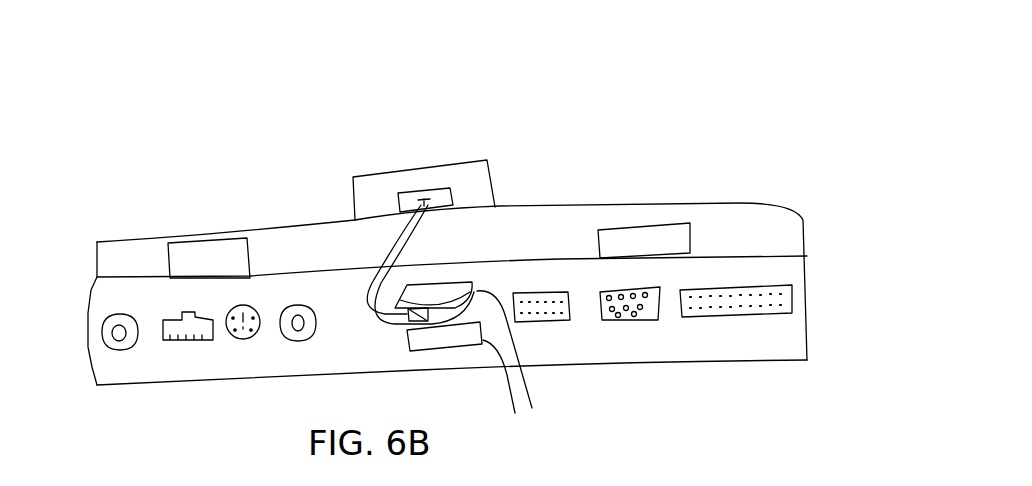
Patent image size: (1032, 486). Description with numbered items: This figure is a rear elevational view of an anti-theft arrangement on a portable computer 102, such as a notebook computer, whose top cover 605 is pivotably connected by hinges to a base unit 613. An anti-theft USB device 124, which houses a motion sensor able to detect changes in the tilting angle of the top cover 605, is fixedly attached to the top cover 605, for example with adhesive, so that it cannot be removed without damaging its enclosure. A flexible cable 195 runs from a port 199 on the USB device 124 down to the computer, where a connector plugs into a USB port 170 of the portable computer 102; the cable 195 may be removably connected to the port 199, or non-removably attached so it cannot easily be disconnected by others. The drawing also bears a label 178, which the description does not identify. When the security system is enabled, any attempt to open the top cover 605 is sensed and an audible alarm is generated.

The portable computer 102 is at (730, 107).
The USB device 124 is at (477, 160).
The connector module 178 is at (443, 283).
The flexible cable 195 is at (477, 210).
The port 199 is at (353, 210).
The top cover 605 is at (737, 203).
The base unit 613 is at (805, 292).
The USB port 170 is at (527, 370).